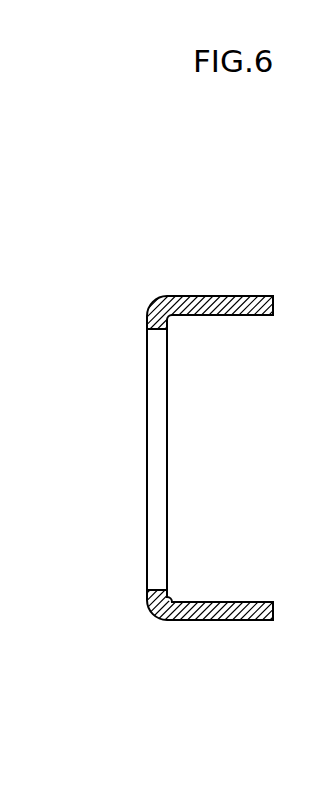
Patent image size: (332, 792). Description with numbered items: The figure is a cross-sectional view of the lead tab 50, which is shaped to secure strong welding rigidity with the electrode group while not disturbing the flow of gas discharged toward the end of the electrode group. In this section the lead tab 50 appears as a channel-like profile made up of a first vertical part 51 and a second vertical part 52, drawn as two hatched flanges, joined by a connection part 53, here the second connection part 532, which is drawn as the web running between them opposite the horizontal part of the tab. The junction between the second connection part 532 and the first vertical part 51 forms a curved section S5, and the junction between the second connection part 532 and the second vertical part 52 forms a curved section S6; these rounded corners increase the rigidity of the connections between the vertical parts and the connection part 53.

The lead tab 50 is at (154, 464).
The first vertical part 51 is at (252, 620).
The second vertical part 52 is at (247, 300).
The connection part 53 is at (94, 459).
The second connection part 532 is at (156, 462).
The curved section S5 is at (159, 617).
The curved section S6 is at (153, 306).